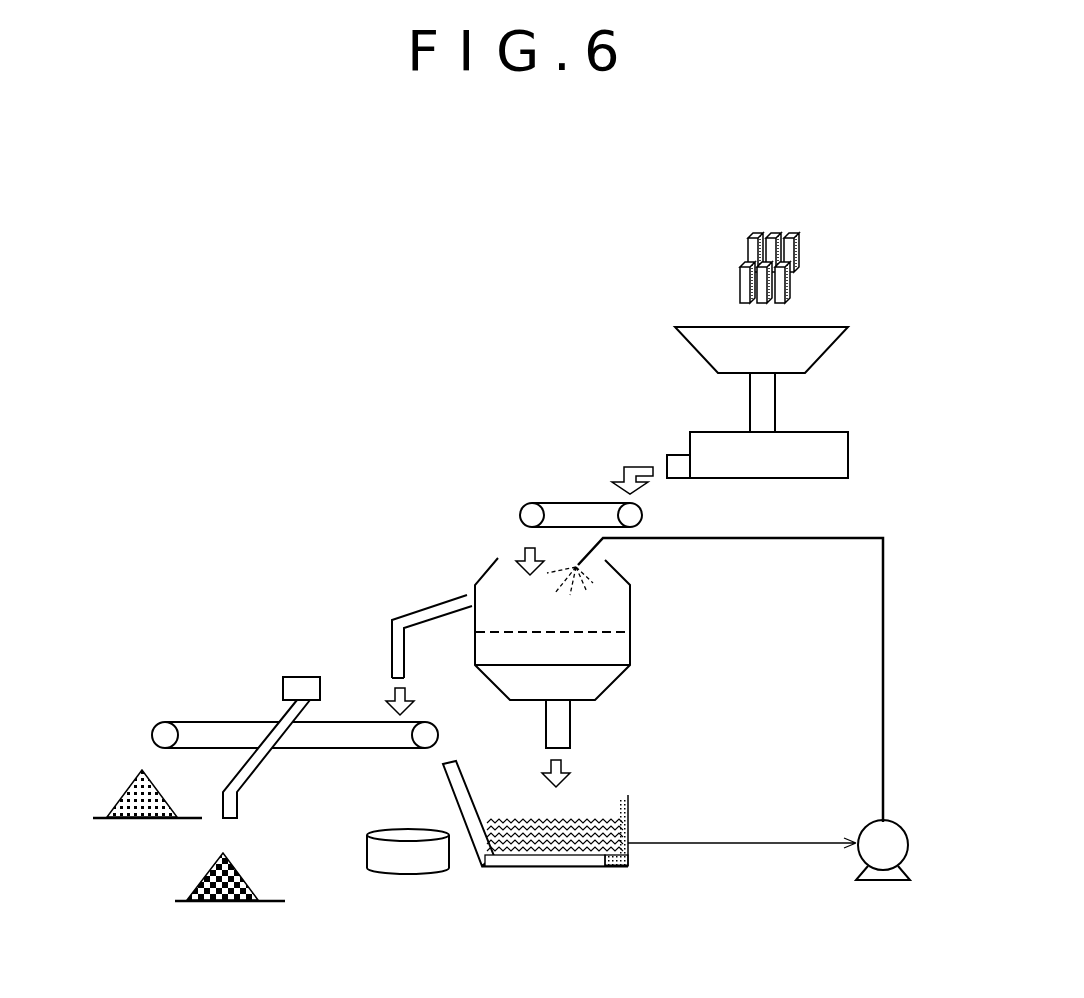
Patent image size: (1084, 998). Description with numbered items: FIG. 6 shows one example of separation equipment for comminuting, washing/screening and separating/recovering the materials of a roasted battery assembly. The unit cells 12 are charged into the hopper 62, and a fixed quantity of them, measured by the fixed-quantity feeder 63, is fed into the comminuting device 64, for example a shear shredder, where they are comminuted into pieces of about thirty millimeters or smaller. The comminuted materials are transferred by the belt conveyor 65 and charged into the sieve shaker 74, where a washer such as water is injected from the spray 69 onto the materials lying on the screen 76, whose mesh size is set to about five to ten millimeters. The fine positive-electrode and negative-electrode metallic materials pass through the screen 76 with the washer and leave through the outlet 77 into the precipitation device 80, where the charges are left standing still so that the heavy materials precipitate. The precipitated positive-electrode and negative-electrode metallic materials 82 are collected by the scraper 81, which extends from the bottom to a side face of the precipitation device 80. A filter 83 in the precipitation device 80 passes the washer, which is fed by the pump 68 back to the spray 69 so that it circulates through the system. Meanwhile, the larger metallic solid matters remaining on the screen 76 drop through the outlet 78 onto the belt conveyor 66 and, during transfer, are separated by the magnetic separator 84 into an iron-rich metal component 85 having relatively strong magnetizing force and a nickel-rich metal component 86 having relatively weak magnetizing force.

The unit cells 12 is at (788, 249).
The hopper 62 is at (840, 339).
The fixed-quantity feeder 63 is at (775, 402).
The comminuting device 64 is at (848, 455).
The belt conveyor 65 is at (560, 502).
The spray 69 is at (598, 548).
The sieve shaker 74 is at (648, 607).
The screen 76 is at (605, 633).
The outlet 77 is at (570, 735).
The outlet 78 is at (427, 610).
The belt conveyor 66 is at (198, 722).
The magnetic separator 84 is at (307, 676).
The nickel-rich metal component 86 is at (130, 773).
The iron-rich metal component 85 is at (237, 865).
The scraper 81 is at (444, 778).
The positive-electrode and negative-electrode metallic materials 82 is at (427, 867).
The filter 83 is at (608, 867).
The precipitation device 80 is at (632, 855).
The pump 68 is at (870, 823).